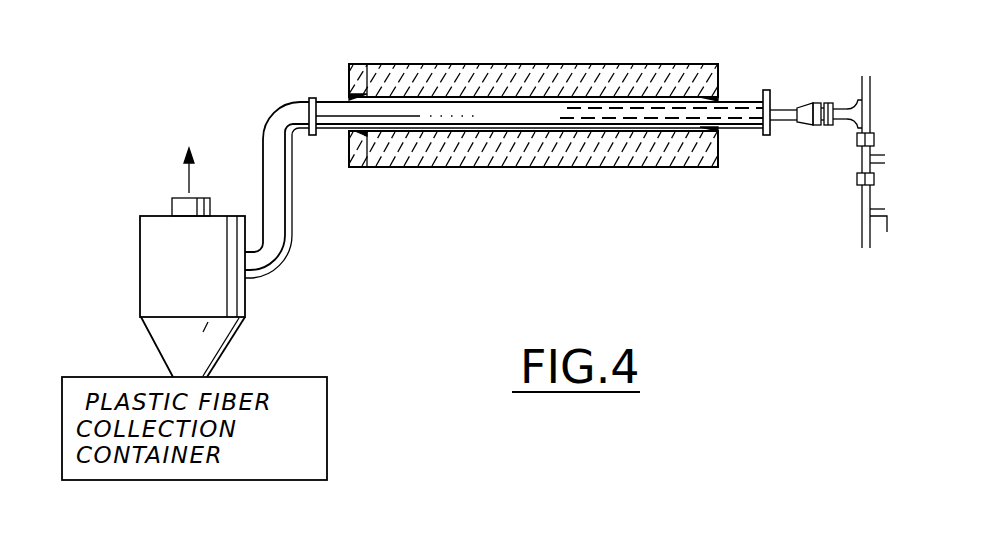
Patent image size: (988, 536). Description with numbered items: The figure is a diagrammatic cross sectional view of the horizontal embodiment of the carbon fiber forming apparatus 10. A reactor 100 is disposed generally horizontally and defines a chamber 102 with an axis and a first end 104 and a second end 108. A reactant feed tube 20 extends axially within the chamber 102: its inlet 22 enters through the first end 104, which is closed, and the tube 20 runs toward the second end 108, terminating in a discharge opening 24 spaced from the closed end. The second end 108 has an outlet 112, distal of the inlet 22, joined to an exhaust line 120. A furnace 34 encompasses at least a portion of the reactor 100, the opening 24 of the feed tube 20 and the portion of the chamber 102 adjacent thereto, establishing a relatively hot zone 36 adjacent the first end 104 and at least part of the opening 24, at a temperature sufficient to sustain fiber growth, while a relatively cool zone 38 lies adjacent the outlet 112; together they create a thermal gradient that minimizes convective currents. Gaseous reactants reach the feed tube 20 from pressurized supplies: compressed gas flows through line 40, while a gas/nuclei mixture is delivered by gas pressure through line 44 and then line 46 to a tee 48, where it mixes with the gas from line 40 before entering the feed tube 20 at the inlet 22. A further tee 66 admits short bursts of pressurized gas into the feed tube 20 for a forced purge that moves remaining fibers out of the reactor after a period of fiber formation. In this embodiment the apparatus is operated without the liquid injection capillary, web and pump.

The apparatus 10 is at (608, 238).
The reactant feed tube 20 is at (786, 106).
The inlet 22 is at (722, 106).
The discharge opening 24 is at (567, 115).
The furnace 34 is at (490, 168).
The hot zone 36 is at (568, 133).
The cool zone 38 is at (369, 168).
The line 40 is at (883, 158).
The line 44 is at (887, 232).
The line 46 is at (866, 249).
The tee 48 is at (860, 157).
The tee 66 is at (869, 110).
The reactor 100 is at (440, 100).
The chamber 102 is at (433, 118).
The first end 104 is at (681, 106).
The second end 108 is at (370, 96).
The outlet 112 is at (309, 97).
The exhaust line 120 is at (262, 130).